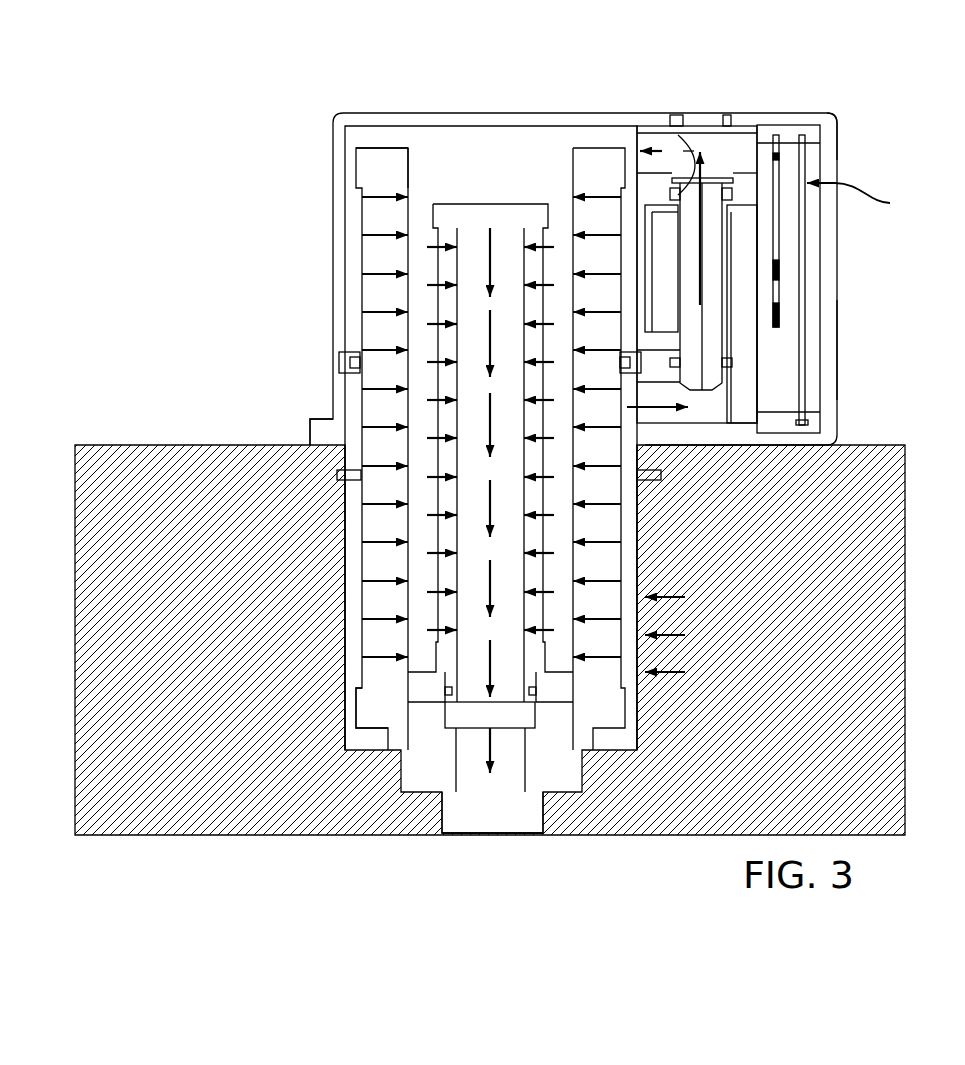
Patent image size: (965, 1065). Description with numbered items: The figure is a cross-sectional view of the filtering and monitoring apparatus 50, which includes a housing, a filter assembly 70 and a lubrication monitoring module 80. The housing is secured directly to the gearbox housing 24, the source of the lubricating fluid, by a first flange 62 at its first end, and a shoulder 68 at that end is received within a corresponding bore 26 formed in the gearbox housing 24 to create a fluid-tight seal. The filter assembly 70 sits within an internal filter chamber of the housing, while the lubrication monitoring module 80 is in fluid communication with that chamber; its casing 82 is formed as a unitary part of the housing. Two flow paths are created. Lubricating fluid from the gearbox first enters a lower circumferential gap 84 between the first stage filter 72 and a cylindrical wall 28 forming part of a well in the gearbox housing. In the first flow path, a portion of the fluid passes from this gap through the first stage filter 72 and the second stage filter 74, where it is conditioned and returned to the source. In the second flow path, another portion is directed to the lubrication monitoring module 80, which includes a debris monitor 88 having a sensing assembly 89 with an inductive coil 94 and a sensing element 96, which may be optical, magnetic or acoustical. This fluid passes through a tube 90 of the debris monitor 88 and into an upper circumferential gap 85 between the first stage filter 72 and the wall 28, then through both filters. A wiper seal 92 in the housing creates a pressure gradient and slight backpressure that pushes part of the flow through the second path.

The gearbox housing 24 is at (878, 445).
The bore 26 is at (346, 485).
The cylindrical wall 28 is at (670, 582).
The filtering and monitoring apparatus 50 is at (868, 135).
The first flange 62 is at (330, 419).
The shoulder 68 is at (337, 474).
The filter assembly 70 is at (422, 797).
The first stage filter 72 is at (584, 158).
The second stage filter 74 is at (433, 218).
The lubrication monitoring module 80 is at (748, 112).
The casing 82 is at (830, 283).
The lower circumferential gap 84 is at (352, 700).
The upper circumferential gap 85 is at (353, 200).
The debris monitor 88 is at (808, 118).
The sensing assembly 89 is at (861, 201).
The tube 90 is at (708, 162).
The wiper seal 92 is at (340, 360).
The inductive coil 94 is at (737, 317).
The sensing element 96 is at (832, 347).